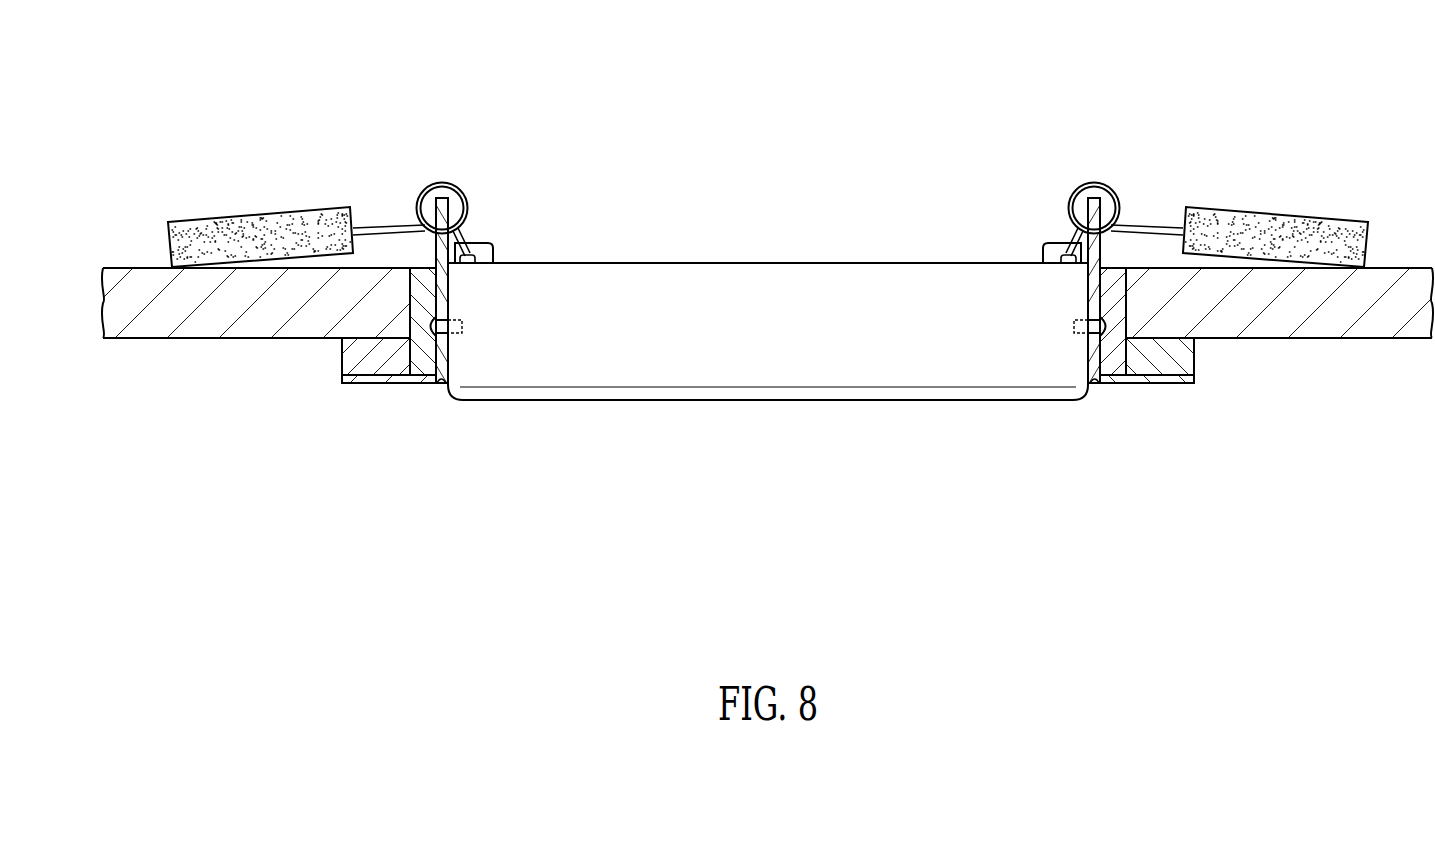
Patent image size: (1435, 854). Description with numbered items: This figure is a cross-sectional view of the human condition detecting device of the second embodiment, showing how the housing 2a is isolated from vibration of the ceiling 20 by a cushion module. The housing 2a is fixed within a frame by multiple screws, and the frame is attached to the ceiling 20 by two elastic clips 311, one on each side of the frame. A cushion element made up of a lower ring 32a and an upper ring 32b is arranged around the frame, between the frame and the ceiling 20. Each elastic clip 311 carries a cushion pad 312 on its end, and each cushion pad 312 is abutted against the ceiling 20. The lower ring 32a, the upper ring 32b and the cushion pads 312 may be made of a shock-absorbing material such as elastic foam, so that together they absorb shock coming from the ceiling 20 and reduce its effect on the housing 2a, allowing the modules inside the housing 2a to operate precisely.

The ceiling 20 is at (200, 332).
The lower ring 32a is at (358, 353).
The upper ring 32b is at (422, 277).
The elastic clip 311 is at (388, 225).
The cushion pad 312 is at (258, 212).
The housing 2a is at (788, 395).